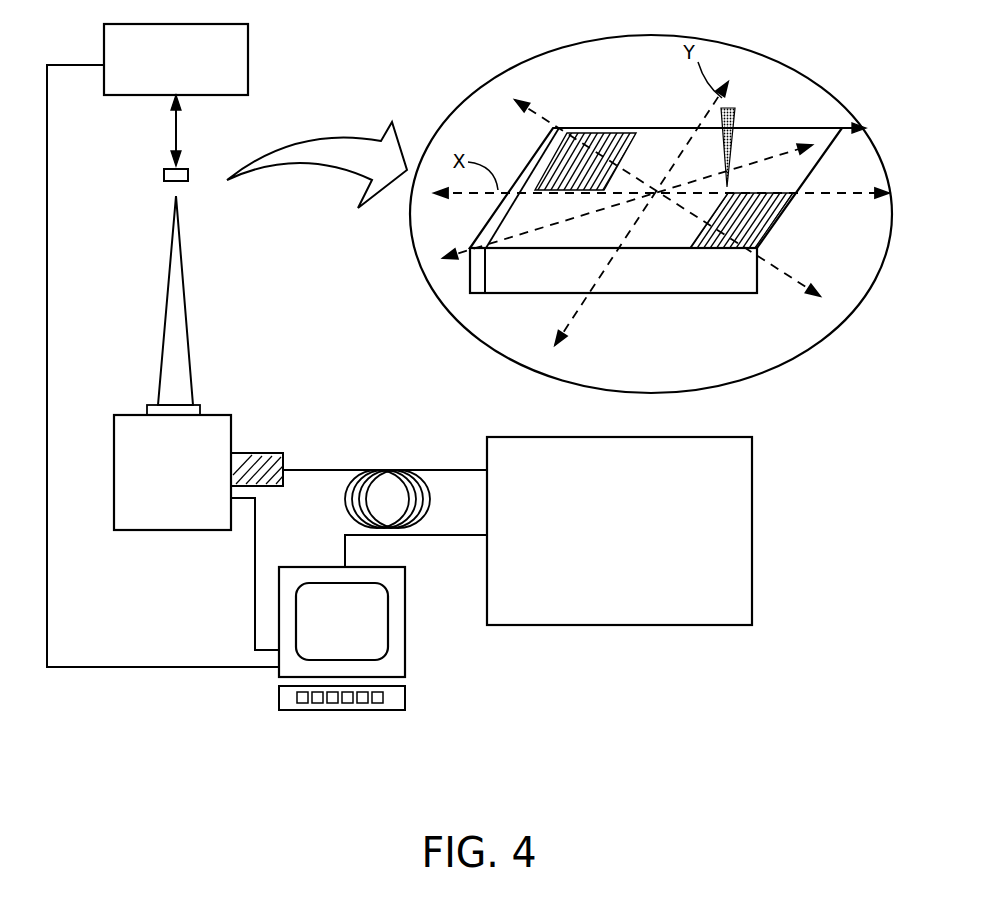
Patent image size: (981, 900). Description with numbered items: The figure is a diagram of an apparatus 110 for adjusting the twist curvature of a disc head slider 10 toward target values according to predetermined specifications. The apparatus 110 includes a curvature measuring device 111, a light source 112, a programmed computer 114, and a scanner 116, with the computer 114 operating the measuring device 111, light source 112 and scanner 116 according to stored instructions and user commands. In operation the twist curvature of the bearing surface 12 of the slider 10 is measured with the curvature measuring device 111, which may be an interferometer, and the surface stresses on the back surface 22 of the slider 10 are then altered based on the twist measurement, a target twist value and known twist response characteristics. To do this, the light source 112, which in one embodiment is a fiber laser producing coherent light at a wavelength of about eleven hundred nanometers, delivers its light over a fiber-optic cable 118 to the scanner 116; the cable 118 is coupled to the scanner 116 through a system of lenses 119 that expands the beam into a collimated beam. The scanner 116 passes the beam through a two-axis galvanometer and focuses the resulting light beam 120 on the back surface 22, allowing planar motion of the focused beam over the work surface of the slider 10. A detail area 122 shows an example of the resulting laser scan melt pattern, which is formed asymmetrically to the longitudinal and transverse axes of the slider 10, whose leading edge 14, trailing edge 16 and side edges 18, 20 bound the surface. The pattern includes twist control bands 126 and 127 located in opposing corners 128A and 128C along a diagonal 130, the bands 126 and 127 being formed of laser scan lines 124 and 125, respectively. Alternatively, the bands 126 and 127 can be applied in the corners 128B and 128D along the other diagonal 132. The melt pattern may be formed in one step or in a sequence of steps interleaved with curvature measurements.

The disc head slider 10 is at (135, 154).
The bearing surface 12 is at (180, 169).
The leading edge 14 is at (766, 268).
The trailing edge 16 is at (476, 240).
The side edge 18 is at (667, 127).
The side edge 20 is at (575, 282).
The back surface 22 is at (164, 178).
The apparatus 110 is at (565, 698).
The curvature measuring device 111 is at (248, 46).
The light source 112 is at (620, 625).
The programmed computer 114 is at (405, 645).
The scanner 116 is at (150, 530).
The fiber-optic cable 118 is at (400, 470).
The system of lenses 119 is at (248, 453).
The light beam 120 is at (163, 322).
The detail area 122 is at (532, 62).
The laser scan lines 124 is at (622, 160).
The laser scan lines 125 is at (698, 220).
The twist control band 126 is at (572, 126).
The twist control band 127 is at (750, 254).
The corner 128A is at (560, 142).
The corner 128B is at (510, 228).
The corner 128C is at (762, 236).
The corner 128D is at (816, 158).
The diagonal 130 is at (826, 297).
The diagonal 132 is at (838, 127).